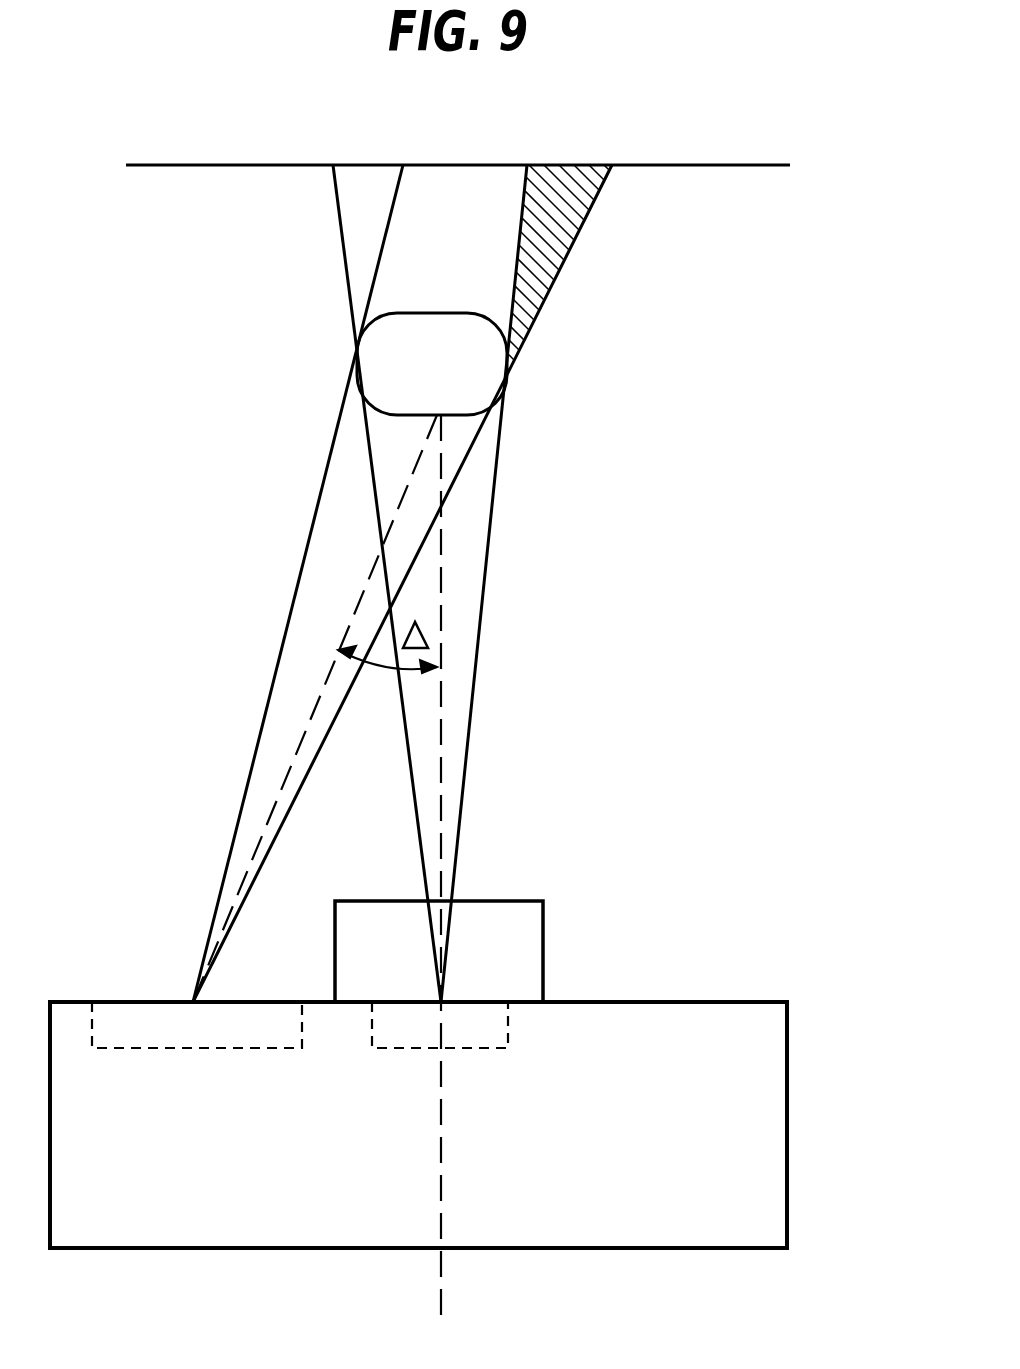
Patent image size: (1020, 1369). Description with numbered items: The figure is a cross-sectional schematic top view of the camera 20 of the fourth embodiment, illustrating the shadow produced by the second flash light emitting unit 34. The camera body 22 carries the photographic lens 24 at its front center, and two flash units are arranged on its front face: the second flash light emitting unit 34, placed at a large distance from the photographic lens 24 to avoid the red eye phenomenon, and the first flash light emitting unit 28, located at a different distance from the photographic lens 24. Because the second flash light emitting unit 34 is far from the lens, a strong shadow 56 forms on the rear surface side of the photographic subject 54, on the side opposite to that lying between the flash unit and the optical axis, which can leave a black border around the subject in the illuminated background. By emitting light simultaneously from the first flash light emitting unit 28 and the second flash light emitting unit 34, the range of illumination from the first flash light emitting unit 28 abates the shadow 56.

The camera 20 is at (813, 1102).
The camera body 22 is at (763, 1178).
The photographic lens 24 is at (523, 928).
The first flash light emitting unit 28 is at (492, 1030).
The second flash light emitting unit 34 is at (160, 1025).
The photographic subject 54 is at (457, 375).
The shadow 56 is at (540, 257).